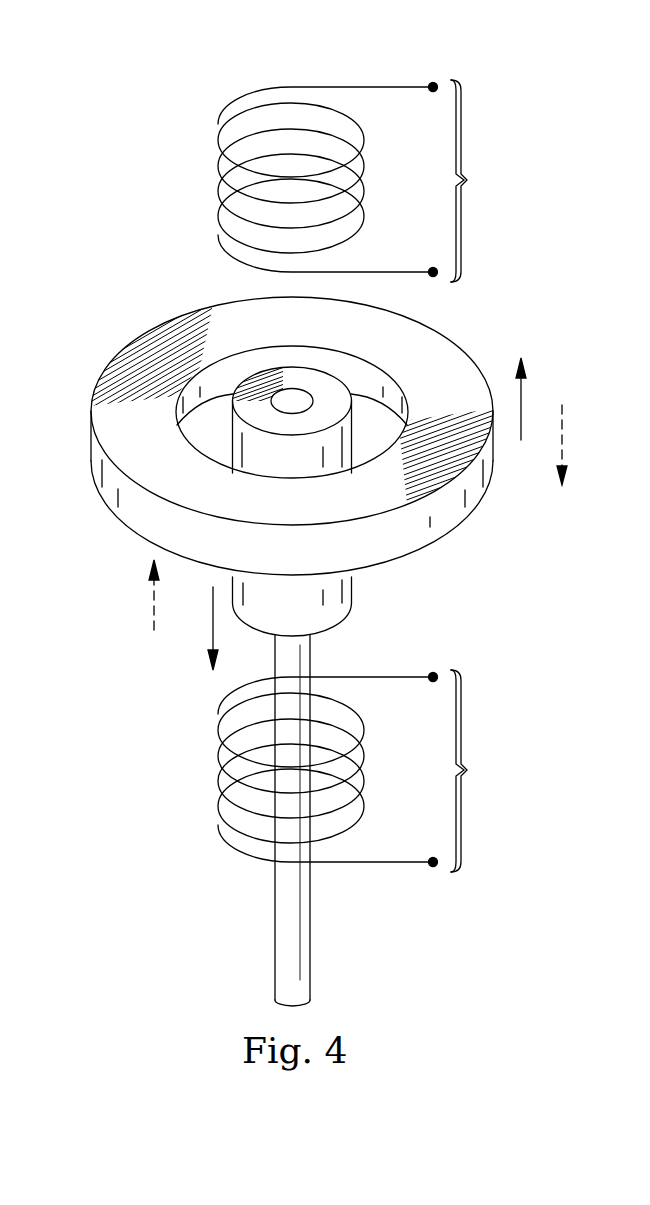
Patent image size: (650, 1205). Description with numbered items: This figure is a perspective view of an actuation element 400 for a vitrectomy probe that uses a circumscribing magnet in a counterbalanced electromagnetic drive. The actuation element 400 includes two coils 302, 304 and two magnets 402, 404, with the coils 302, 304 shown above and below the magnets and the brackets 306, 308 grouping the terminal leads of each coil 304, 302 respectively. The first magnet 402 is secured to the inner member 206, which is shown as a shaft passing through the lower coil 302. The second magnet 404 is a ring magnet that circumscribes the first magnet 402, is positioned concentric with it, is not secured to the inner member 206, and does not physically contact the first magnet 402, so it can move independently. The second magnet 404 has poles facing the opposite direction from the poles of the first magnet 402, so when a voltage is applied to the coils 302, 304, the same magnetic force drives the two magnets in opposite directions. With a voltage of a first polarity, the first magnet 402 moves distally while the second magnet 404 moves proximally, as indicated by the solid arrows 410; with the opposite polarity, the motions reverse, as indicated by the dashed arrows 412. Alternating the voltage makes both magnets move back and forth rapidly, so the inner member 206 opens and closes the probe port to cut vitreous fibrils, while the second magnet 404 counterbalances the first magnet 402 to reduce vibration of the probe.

The actuation element 400 is at (134, 78).
The coil 304 is at (218, 182).
The upper coil terminals 306 is at (474, 181).
The second magnet 404 is at (91, 451).
The first magnet 402 is at (352, 586).
The inner member 206 is at (275, 928).
The coil 302 is at (218, 772).
The lower coil terminals 308 is at (474, 771).
The solid arrows 410 is at (521, 392).
The dashed arrows 412 is at (562, 435).